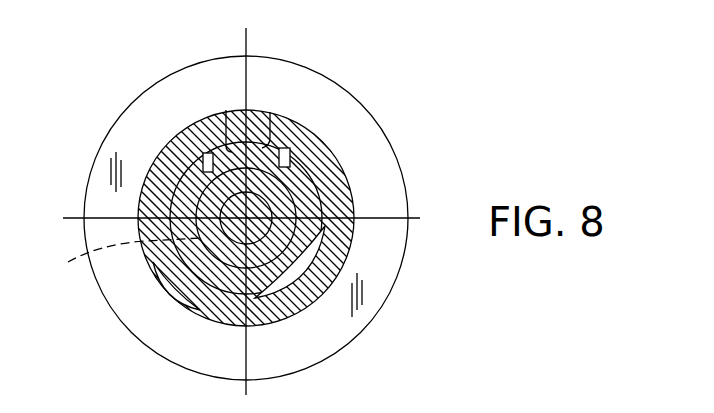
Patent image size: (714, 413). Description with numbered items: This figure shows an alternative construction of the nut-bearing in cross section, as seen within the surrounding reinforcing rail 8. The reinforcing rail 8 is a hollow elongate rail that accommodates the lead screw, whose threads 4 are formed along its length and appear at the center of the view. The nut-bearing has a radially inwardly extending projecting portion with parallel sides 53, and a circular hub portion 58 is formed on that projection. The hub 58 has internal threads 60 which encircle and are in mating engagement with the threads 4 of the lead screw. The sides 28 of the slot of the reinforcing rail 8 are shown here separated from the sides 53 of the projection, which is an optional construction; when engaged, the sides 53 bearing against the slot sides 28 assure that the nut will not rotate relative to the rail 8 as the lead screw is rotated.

The threads 4 is at (271, 211).
The reinforcing rail 8 is at (325, 250).
The sidewalls 28 is at (226, 110).
The parallel sides 53 is at (207, 172).
The circular hub portion 58 is at (180, 302).
The internal threads 60 is at (113, 258).